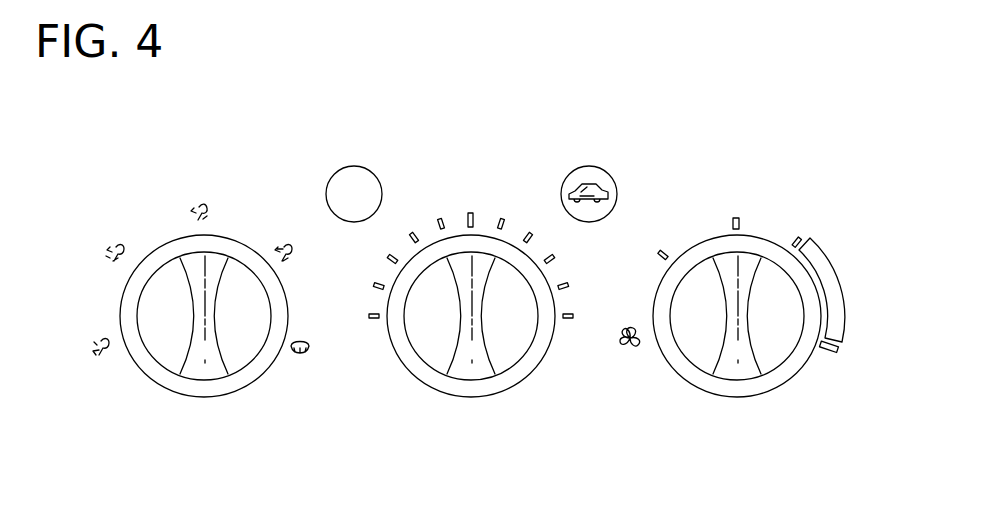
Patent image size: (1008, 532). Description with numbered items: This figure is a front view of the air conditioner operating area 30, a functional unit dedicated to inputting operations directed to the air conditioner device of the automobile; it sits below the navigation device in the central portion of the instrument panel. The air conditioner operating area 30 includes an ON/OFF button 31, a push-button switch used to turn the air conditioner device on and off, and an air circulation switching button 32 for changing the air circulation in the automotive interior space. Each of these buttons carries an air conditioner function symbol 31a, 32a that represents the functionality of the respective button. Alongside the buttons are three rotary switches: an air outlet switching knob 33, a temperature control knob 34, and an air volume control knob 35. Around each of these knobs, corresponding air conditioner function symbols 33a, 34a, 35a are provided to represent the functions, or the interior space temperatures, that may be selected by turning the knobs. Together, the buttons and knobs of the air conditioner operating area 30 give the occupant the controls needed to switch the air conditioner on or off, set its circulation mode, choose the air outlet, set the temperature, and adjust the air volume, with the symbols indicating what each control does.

The air conditioner operating area 30 is at (506, 120).
The ON/OFF button 31 is at (367, 167).
The air conditioner function symbol 31a is at (339, 186).
The air circulation switching button 32 is at (601, 168).
The air conditioner function symbol 32a is at (577, 186).
The air outlet switching knob 33 is at (239, 240).
The air conditioner function symbols 33a is at (198, 207).
The temperature control knob 34 is at (540, 355).
The air conditioner function symbols 34a is at (521, 233).
The air volume control knob 35 is at (810, 353).
The air conditioner function symbols 35a is at (741, 222).